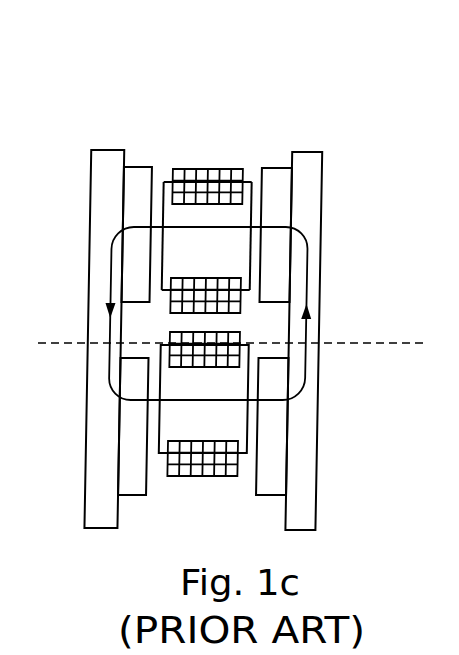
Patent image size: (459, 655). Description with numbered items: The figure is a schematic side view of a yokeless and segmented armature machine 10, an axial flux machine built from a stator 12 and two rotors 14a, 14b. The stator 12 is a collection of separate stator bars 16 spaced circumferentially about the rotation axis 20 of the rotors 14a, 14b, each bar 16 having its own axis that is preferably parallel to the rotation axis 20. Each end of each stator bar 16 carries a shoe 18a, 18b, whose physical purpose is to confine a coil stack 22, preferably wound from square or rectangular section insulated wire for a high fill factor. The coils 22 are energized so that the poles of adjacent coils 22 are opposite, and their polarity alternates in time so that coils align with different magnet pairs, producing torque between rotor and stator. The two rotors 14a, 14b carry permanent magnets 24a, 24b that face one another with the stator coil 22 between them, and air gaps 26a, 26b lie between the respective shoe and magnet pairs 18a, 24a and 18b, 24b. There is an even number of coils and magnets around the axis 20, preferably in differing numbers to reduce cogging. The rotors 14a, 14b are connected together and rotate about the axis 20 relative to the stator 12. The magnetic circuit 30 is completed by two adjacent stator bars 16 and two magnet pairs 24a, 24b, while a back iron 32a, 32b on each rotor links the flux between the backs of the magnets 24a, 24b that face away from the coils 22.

The yokeless and segmented armature machine 10 is at (252, 56).
The stator 12 is at (188, 500).
The rotor 14a is at (98, 530).
The rotor 14b is at (302, 530).
The stator bar 16 is at (202, 186).
The shoe 18a is at (160, 185).
The shoe 18b is at (256, 185).
The rotation axis 20 is at (62, 338).
The coil stack 22 is at (178, 172).
The permanent magnet 24a is at (133, 273).
The permanent magnet 24b is at (277, 282).
The air gap 26a is at (152, 172).
The air gap 26b is at (257, 193).
The magnetic circuit 30 is at (310, 363).
The back iron 32a is at (98, 488).
The back iron 32b is at (303, 480).